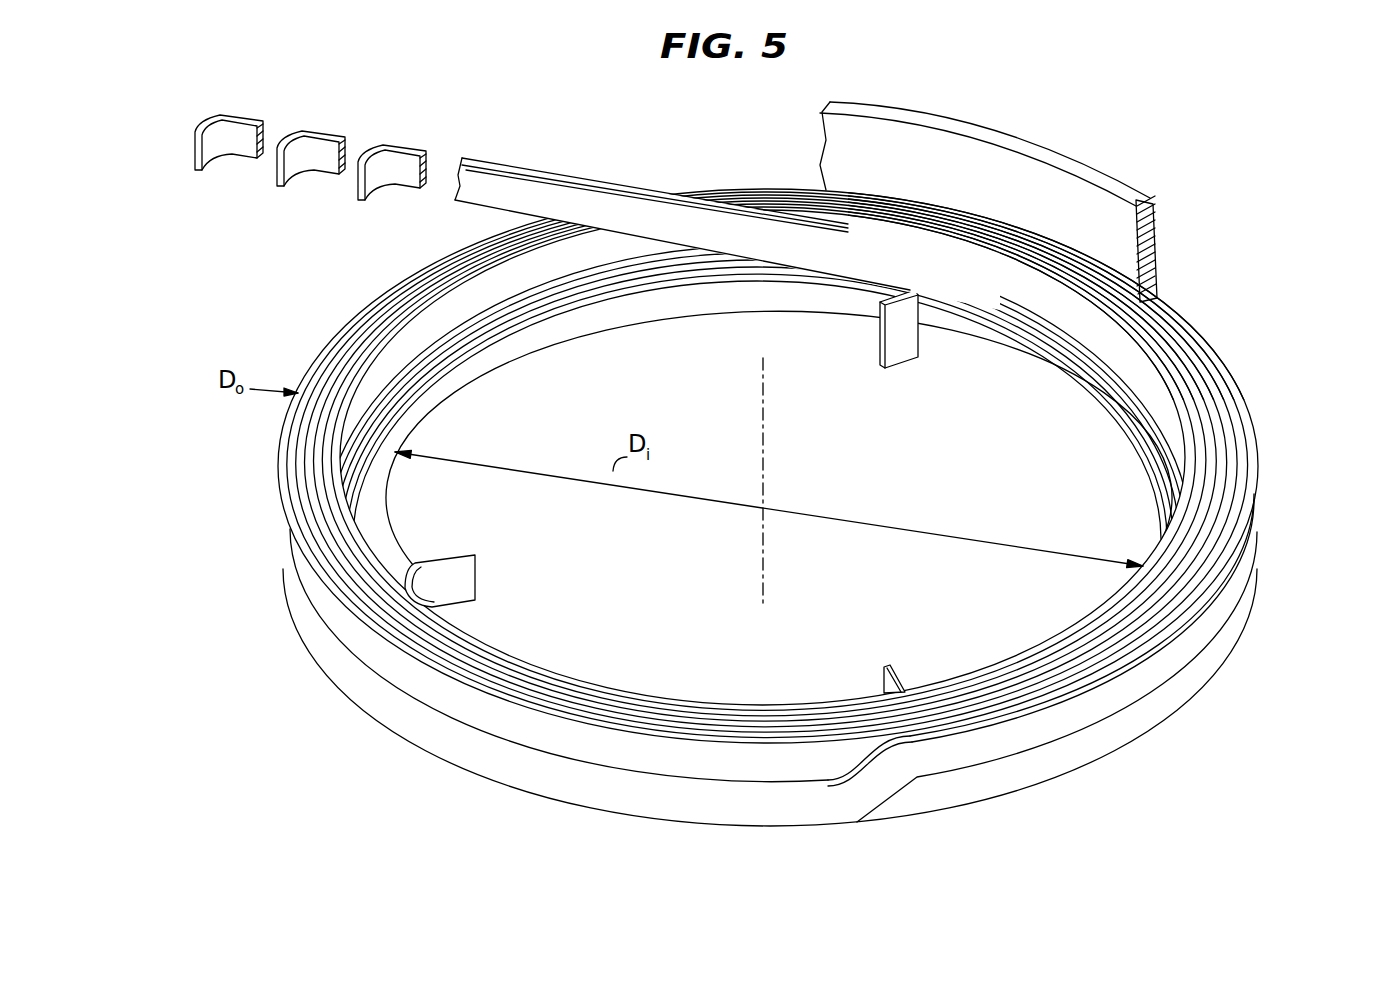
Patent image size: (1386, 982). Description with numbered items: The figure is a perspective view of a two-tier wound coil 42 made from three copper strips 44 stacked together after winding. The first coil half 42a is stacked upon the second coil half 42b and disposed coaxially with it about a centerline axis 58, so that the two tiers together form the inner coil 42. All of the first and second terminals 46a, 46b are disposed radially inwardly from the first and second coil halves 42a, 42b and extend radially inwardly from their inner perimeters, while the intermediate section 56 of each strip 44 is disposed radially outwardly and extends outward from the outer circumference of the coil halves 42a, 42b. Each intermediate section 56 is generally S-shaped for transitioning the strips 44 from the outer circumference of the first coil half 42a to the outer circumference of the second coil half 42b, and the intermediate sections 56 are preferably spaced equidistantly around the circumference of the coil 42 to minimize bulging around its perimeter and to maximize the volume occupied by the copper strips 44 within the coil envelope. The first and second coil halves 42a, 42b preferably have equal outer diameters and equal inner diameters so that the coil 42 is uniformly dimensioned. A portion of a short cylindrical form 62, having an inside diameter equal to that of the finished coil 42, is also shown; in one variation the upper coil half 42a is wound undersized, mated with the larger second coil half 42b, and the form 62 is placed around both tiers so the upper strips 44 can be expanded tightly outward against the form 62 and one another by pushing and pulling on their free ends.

The two-tier coil 42 is at (821, 629).
The first coil half 42a is at (1230, 599).
The second coil half 42b is at (1192, 669).
The copper strips 44 is at (322, 386).
The first terminals 46a is at (196, 165).
The second terminals 46b is at (880, 338).
The intermediate section 56 is at (1038, 212).
The centerline axis 58 is at (756, 578).
The cylindrical form 62 is at (1160, 212).